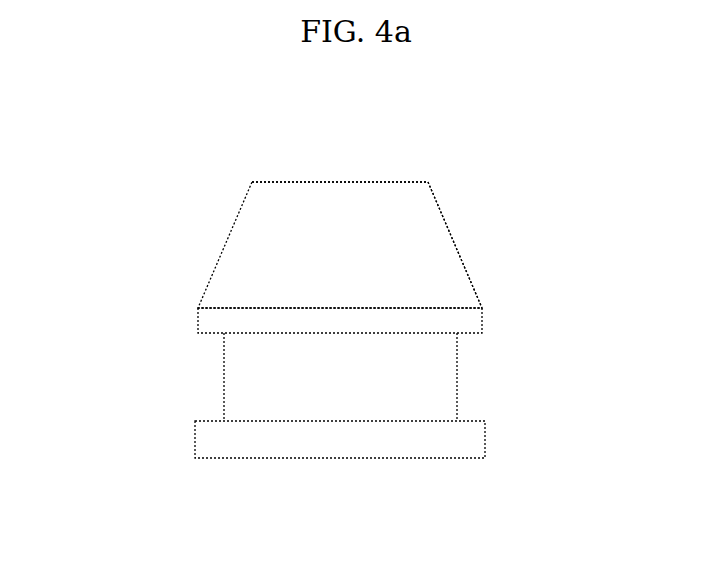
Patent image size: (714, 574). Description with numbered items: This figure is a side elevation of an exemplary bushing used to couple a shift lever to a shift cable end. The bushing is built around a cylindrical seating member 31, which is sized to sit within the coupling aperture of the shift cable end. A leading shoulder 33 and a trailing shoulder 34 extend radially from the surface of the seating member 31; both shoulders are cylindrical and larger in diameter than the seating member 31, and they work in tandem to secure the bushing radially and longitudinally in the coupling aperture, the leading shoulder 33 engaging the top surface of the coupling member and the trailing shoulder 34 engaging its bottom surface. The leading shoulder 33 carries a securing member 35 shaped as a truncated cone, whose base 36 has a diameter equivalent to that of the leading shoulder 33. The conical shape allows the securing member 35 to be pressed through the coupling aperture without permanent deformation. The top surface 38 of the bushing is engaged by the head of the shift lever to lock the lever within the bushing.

The seating member 31 is at (253, 379).
The leading shoulder 33 is at (467, 325).
The trailing shoulder 34 is at (269, 453).
The securing member 35 is at (245, 235).
The base 36 is at (482, 308).
The top surface 38 is at (277, 182).